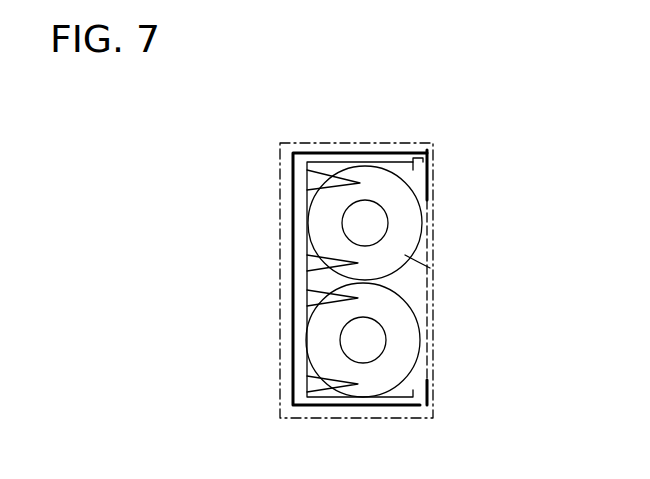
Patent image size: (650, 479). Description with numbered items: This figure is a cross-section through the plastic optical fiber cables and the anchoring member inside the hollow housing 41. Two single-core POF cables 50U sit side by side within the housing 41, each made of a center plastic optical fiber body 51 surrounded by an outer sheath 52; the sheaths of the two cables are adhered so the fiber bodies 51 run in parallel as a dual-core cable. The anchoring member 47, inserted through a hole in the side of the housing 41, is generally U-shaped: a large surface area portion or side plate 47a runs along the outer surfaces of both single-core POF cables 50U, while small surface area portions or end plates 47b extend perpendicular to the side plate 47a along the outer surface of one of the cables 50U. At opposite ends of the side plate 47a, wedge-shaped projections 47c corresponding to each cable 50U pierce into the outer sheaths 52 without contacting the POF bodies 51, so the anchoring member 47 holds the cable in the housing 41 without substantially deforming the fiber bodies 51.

The housing 41 is at (283, 150).
The anchoring member 47 is at (292, 230).
The large surface area portion (side plate) 47a is at (305, 307).
The small surface area portions (end plates) 47b is at (435, 153).
The wedge-shaped projections 47c is at (428, 179).
The single-core POF cable 50U is at (430, 220).
The plastic optical fiber body 51 is at (378, 225).
The outer sheath 52 is at (432, 269).